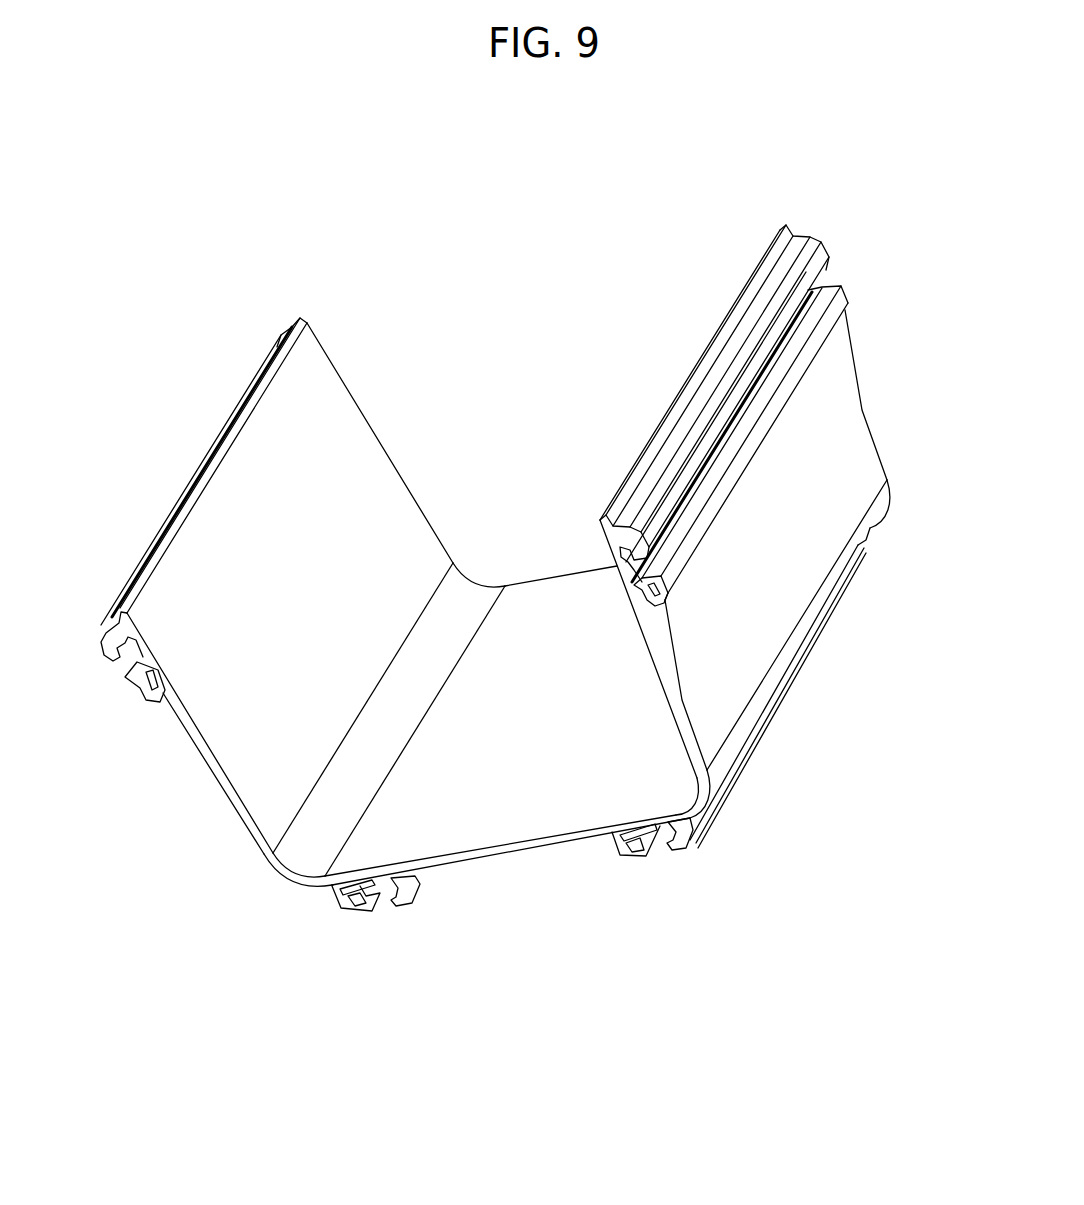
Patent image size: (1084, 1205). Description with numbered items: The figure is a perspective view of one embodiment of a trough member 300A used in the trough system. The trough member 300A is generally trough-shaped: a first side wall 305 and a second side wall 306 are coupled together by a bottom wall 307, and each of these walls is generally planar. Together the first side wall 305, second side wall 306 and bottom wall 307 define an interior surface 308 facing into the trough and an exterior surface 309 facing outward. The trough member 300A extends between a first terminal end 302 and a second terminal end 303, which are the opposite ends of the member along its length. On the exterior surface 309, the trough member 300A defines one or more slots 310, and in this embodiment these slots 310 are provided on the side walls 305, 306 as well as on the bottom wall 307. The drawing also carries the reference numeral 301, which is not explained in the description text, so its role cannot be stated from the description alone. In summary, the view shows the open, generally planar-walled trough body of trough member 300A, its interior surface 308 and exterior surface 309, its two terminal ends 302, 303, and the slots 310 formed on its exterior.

The trough member 300A is at (826, 192).
The side wall top rail 301 is at (638, 422).
The first terminal end 302 is at (510, 858).
The second terminal end 303 is at (515, 577).
The first side wall 305 is at (816, 520).
The second side wall 306 is at (312, 432).
The bottom wall 307 is at (606, 661).
The interior surface 308 is at (503, 781).
The exterior surface 309 is at (822, 456).
The slots 310 is at (674, 557).